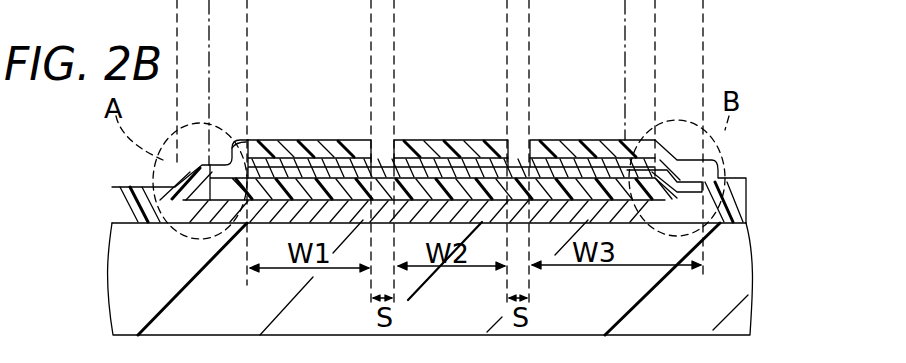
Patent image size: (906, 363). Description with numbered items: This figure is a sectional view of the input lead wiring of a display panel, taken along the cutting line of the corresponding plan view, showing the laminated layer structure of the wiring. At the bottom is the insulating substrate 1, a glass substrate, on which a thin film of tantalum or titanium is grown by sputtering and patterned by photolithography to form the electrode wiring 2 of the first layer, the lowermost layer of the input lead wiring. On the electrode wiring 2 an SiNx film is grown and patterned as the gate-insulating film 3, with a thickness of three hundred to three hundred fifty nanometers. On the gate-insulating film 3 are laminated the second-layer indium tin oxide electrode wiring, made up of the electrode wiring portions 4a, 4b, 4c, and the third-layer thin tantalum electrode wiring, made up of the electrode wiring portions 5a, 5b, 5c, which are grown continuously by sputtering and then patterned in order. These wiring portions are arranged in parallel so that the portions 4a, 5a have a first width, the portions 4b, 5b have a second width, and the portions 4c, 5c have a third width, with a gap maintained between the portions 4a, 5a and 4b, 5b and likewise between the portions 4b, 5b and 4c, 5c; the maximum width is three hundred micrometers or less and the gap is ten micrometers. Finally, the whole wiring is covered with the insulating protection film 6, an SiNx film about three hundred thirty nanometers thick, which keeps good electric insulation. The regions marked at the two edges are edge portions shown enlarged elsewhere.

The insulating substrate 1 is at (752, 271).
The electrode wiring of the first layer 2 is at (250, 221).
The gate-insulating film 3 is at (738, 184).
The electrode wiring portion 4a is at (338, 160).
The electrode wiring portion 4b is at (465, 160).
The electrode wiring portion 4c is at (589, 160).
The electrode wiring portion 5a is at (292, 141).
The electrode wiring portion 5b is at (421, 141).
The electrode wiring portion 5c is at (548, 141).
The insulating protection film 6 is at (247, 139).